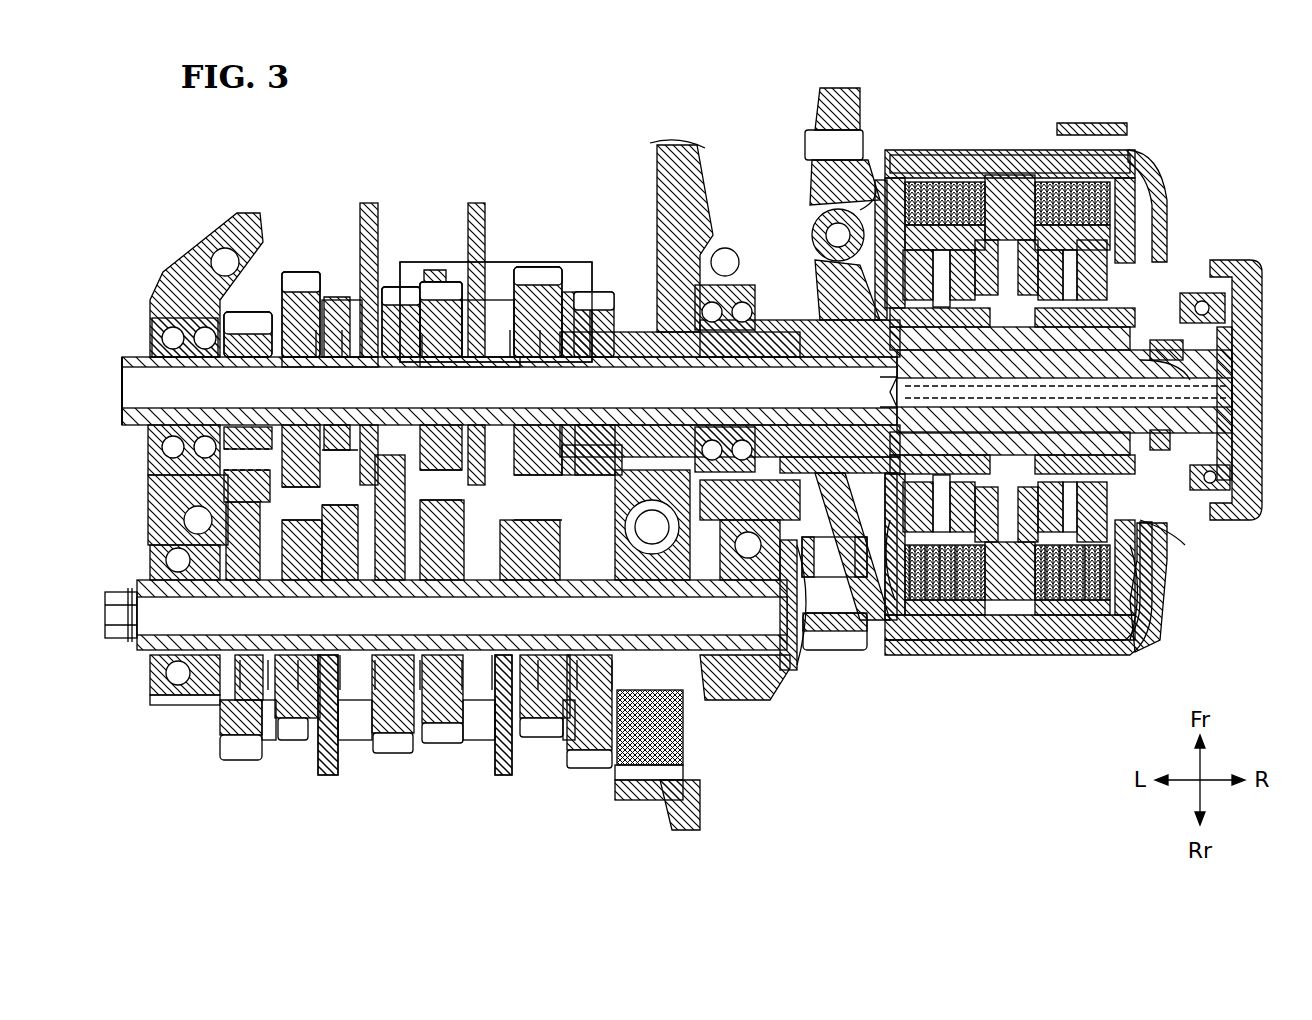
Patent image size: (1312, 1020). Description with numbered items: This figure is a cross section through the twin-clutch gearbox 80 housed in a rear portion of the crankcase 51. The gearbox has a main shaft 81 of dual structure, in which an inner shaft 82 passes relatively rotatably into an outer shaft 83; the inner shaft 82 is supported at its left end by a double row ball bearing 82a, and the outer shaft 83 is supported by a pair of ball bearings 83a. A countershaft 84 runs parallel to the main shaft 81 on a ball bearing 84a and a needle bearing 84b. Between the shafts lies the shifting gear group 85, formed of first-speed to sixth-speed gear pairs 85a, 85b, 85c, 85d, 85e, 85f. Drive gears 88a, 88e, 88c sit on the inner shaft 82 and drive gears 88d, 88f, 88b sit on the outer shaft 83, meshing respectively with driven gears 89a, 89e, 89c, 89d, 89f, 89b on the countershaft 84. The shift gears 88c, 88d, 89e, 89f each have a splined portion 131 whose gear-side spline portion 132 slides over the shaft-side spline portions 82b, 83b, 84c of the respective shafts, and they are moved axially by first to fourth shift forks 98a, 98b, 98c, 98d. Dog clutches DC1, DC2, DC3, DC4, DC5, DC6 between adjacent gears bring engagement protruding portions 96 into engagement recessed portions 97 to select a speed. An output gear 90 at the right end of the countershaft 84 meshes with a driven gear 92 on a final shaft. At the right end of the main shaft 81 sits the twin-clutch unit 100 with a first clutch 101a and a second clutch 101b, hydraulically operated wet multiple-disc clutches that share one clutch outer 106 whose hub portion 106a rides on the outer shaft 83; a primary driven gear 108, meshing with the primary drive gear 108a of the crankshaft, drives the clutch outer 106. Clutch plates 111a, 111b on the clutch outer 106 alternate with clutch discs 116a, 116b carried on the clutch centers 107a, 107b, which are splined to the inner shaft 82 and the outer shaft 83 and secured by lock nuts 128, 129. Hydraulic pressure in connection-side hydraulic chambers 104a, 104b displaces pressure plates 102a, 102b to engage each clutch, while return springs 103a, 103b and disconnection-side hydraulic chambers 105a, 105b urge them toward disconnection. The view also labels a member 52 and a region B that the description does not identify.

The twin-clutch gearbox 80 is at (628, 140).
The main shaft 81 is at (120, 357).
The inner shaft 82 is at (178, 412).
The double row ball bearing 82a is at (150, 330).
The shaft-side spline portion 82b is at (386, 355).
The outer shaft 83 is at (638, 333).
The ball bearings 83a is at (745, 298).
The shaft-side spline portion 83b is at (468, 355).
The countershaft 84 is at (145, 648).
The ball bearing 84a is at (180, 680).
The needle bearing 84b is at (745, 655).
The shaft-side spline portion 84c is at (338, 690).
The shifting gear group 85 is at (547, 163).
The first-speed gear pair 85a is at (237, 310).
The second-speed gear pair 85b is at (603, 298).
The third-speed gear pair 85c is at (388, 270).
The fourth-speed gear pair 85d is at (425, 268).
The fifth-speed gear pair 85e is at (292, 262).
The sixth-speed gear pair 85f is at (556, 262).
The first-speed drive gear 88a is at (258, 310).
The second-speed drive gear 88b is at (580, 305).
The third-speed drive gear 88c is at (416, 296).
The fourth-speed drive gear 88d is at (457, 285).
The fifth-speed drive gear 88e is at (307, 272).
The sixth-speed drive gear 88f is at (538, 272).
The first-speed driven gear 89a is at (242, 762).
The second-speed driven gear 89b is at (590, 768).
The third-speed driven gear 89c is at (393, 752).
The fourth-speed driven gear 89d is at (442, 745).
The fifth-speed driven gear 89e is at (288, 742).
The sixth-speed driven gear 89f is at (540, 738).
The output gear 90 is at (688, 758).
The driven gear 92 is at (700, 806).
The engagement protruding portions 96 is at (346, 352).
The engagement recessed portions 97 is at (318, 352).
The first shift fork 98a is at (325, 775).
The second shift fork 98b is at (503, 775).
The third shift fork 98c is at (370, 205).
The fourth shift fork 98d is at (472, 200).
The twin-clutch unit 100 is at (1132, 173).
The first clutch 101a is at (1106, 178).
The second clutch 101b is at (928, 210).
The pressure plate 102a is at (1030, 200).
The pressure plate 102b is at (1000, 185).
The return spring 103a is at (1185, 560).
The return spring 103b is at (898, 640).
The connection-side hydraulic chamber 104a is at (1030, 210).
The connection-side hydraulic chamber 104b is at (950, 172).
The disconnection-side hydraulic chamber 105a is at (1180, 536).
The disconnection-side hydraulic chamber 105b is at (870, 455).
The clutch outer 106 is at (1085, 148).
The hub portion 106a is at (800, 300).
The clutch center 107a is at (1150, 300).
The clutch center 107b is at (852, 160).
The primary driven gear 108 is at (812, 140).
The primary drive gear 108a is at (828, 103).
The clutch plates 111a is at (1060, 630).
The clutch plates 111b is at (905, 630).
The clutch discs 116a is at (1090, 630).
The clutch discs 116b is at (945, 630).
The lock nut 128 is at (1172, 305).
The lock nut 129 is at (1010, 470).
The splined portion 131 is at (340, 290).
The gear-side spline portion 132 is at (424, 352).
The crankcase 51 is at (175, 268).
The clutch cover case 52 is at (1246, 268).
The dog clutch unit B is at (583, 275).
The first dog clutch DC1 is at (268, 715).
The second dog clutch DC2 is at (575, 735).
The third dog clutch DC3 is at (355, 715).
The fourth dog clutch DC4 is at (472, 715).
The fifth dog clutch DC5 is at (338, 268).
The sixth dog clutch DC6 is at (506, 285).